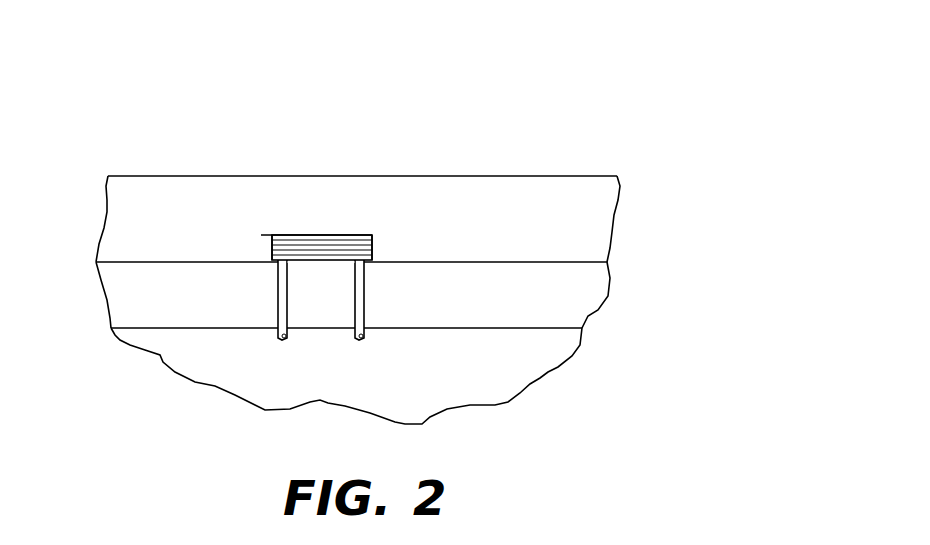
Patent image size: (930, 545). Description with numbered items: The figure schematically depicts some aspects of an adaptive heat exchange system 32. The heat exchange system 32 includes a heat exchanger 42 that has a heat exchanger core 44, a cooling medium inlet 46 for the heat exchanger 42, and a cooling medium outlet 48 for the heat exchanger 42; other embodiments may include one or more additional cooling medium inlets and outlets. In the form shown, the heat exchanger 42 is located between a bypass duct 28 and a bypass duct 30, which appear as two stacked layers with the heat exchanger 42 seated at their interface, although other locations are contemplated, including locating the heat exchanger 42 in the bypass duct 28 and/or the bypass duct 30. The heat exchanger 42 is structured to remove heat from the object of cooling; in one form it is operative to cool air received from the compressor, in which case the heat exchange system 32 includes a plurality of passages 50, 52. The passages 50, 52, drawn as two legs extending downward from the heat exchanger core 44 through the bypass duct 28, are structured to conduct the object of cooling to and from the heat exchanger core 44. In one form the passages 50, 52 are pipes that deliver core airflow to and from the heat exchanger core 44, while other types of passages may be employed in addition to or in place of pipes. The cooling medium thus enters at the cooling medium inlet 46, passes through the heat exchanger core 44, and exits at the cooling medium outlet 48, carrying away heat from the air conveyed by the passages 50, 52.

The heat exchange system 32 is at (476, 56).
The bypass duct 30 is at (127, 213).
The bypass duct 28 is at (142, 299).
The heat exchanger 42 is at (311, 207).
The heat exchanger core 44 is at (320, 250).
The cooling medium inlet 46 is at (267, 248).
The cooling medium outlet 48 is at (373, 247).
The passage 50 is at (278, 312).
The passage 52 is at (364, 286).